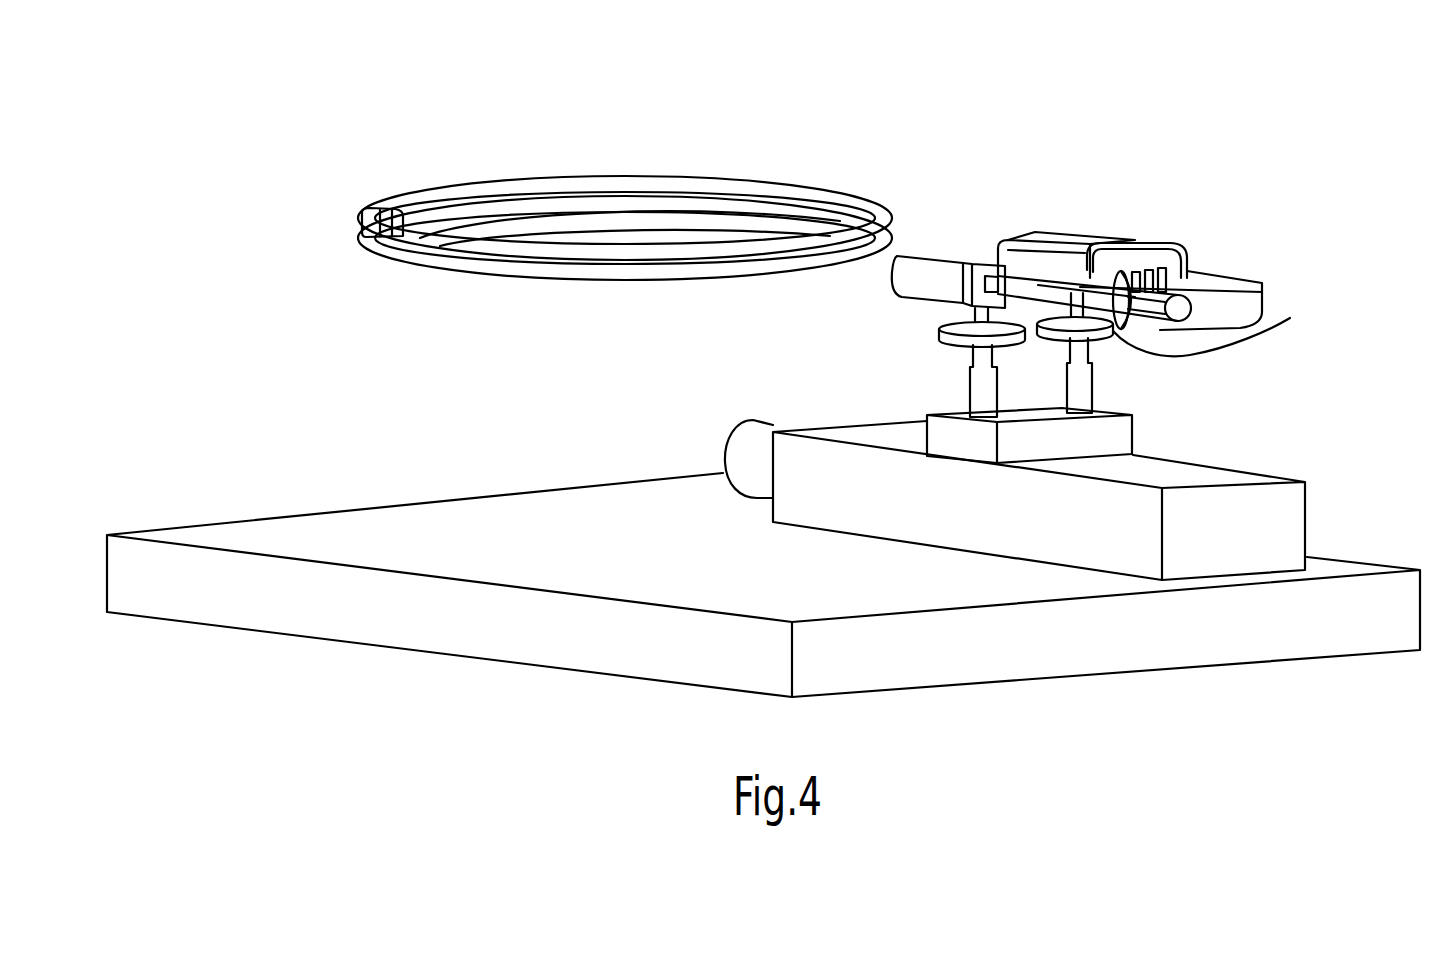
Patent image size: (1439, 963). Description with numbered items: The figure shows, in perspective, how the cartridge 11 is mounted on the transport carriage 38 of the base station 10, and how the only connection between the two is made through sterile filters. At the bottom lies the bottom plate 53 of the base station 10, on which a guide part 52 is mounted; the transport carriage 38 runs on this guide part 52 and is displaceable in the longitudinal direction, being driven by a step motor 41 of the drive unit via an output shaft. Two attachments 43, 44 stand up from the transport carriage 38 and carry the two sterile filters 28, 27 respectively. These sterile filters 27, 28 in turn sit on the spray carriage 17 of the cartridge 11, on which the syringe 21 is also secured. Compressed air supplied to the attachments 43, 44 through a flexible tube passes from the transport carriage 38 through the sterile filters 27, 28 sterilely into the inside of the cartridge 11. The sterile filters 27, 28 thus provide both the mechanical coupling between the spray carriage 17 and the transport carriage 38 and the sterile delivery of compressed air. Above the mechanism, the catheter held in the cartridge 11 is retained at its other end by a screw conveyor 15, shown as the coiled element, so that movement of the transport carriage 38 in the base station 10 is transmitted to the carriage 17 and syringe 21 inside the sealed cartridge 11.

The base station 10 is at (1142, 679).
The cartridge 11 is at (1208, 246).
The screw conveyor 15 is at (693, 177).
The carriage 17 is at (979, 265).
The syringe 21 is at (1040, 290).
The sterile filter 27 is at (1290, 318).
The sterile filter 28 is at (940, 330).
The transport carriage 38 is at (1112, 433).
The step motor 41 is at (760, 450).
The attachment 43 is at (978, 388).
The attachment 44 is at (1088, 388).
The guide part 52 is at (1072, 515).
The bottom plate 53 is at (627, 622).